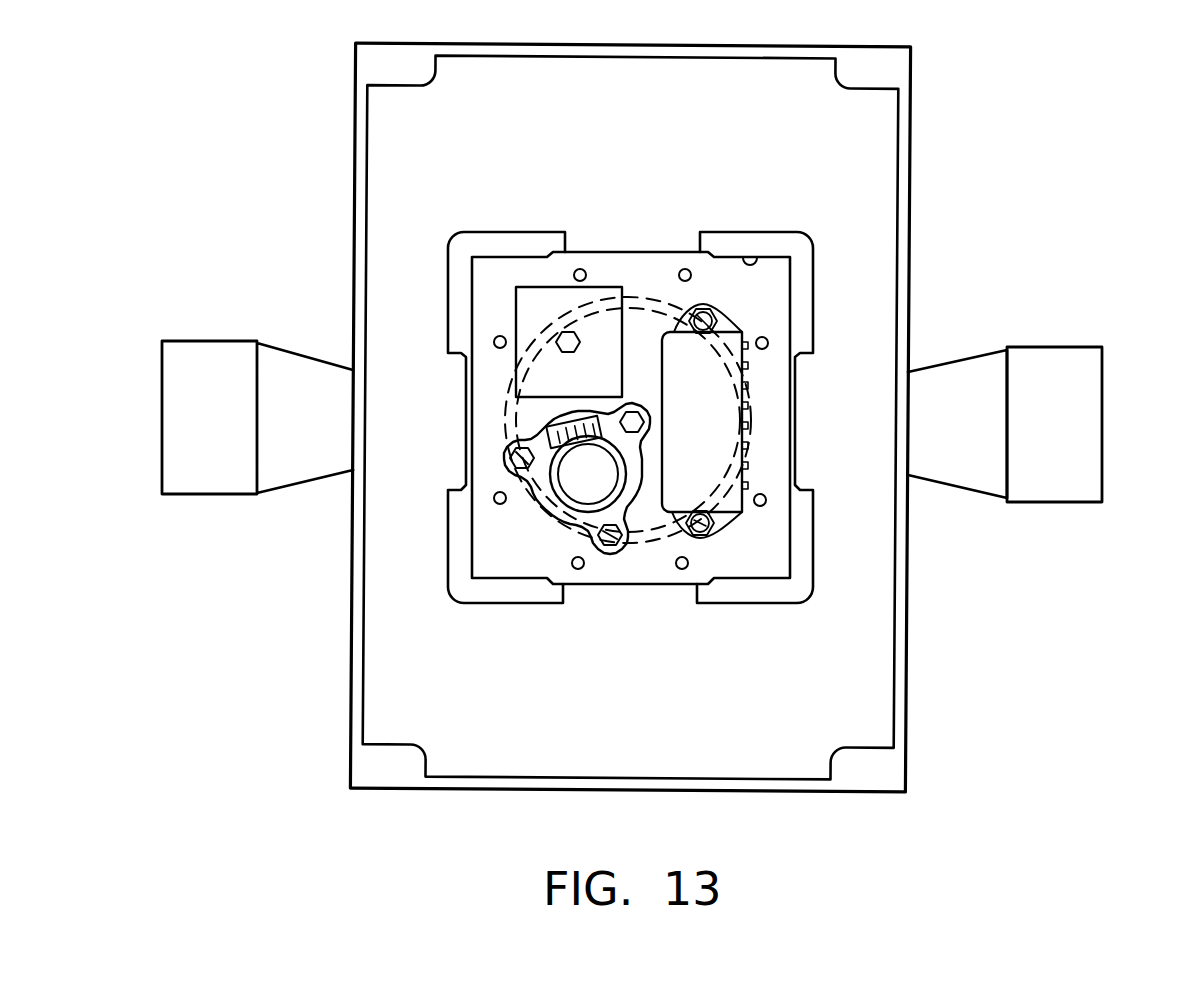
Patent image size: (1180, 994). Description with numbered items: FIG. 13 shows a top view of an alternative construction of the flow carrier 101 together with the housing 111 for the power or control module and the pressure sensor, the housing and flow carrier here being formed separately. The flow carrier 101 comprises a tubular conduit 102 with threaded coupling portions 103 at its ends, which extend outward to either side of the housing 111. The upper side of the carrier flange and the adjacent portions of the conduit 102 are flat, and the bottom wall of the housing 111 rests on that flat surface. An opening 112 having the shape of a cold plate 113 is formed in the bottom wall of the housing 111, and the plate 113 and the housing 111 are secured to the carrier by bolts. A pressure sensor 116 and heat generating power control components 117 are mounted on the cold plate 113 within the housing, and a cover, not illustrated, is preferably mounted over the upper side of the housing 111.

The flow carrier 101 is at (1021, 406).
The tubular conduit 102 is at (942, 470).
The threaded coupling portions 103 is at (1065, 360).
The housing 111 is at (926, 184).
The opening 112 is at (746, 260).
The cold plate 113 is at (775, 296).
The pressure sensor 116 is at (555, 495).
The heat generating power control components 117 is at (515, 358).